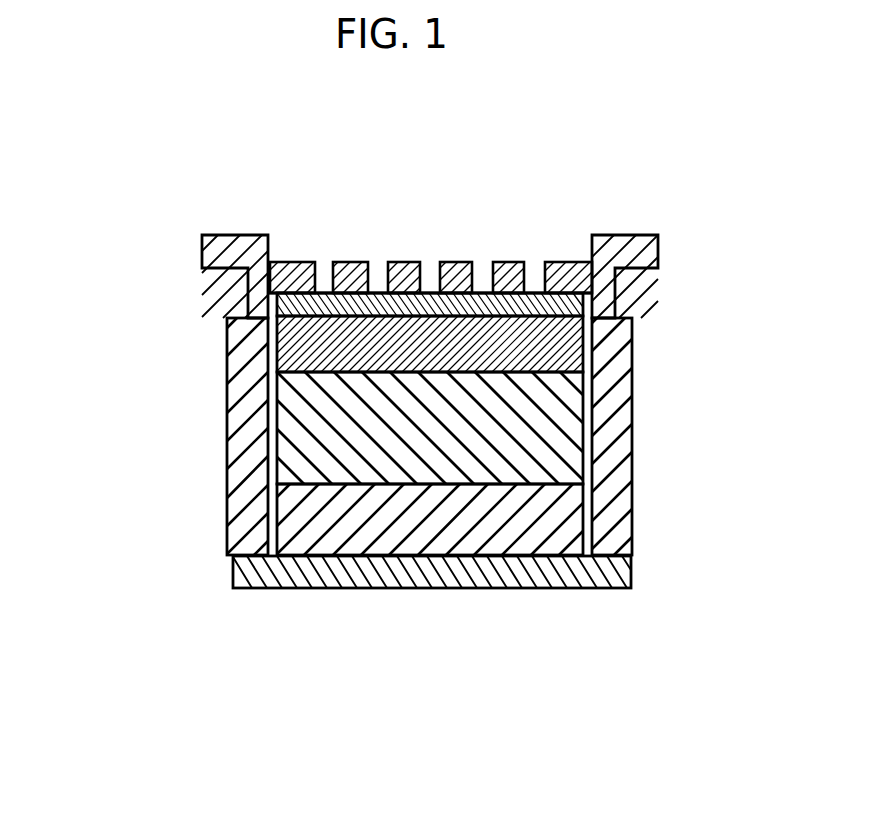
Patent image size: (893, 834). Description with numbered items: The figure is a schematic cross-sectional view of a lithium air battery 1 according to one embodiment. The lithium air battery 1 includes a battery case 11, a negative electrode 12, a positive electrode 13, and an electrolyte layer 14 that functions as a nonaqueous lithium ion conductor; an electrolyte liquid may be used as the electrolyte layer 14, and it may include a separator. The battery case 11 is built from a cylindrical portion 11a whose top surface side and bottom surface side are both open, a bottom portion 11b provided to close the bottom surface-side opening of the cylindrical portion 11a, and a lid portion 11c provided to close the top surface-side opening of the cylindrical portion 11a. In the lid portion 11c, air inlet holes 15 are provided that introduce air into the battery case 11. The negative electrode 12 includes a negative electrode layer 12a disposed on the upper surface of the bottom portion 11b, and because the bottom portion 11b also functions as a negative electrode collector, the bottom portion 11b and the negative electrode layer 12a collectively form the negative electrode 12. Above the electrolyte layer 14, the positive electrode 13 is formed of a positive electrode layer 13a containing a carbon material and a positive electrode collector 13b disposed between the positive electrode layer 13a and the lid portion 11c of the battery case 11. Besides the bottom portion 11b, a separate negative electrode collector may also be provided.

The lithium air battery 1 is at (198, 178).
The battery case 11 is at (87, 330).
The cylindrical portion 11a is at (252, 407).
The bottom portion 11b is at (232, 574).
The lid portion 11c is at (250, 306).
The negative electrode 12 is at (745, 510).
The negative electrode layer 12a is at (553, 518).
The positive electrode 13 is at (745, 307).
The positive electrode layer 13a is at (553, 343).
The positive electrode collector 13b is at (553, 300).
The electrolyte layer 14 is at (550, 422).
The air inlet holes 15 is at (324, 270).